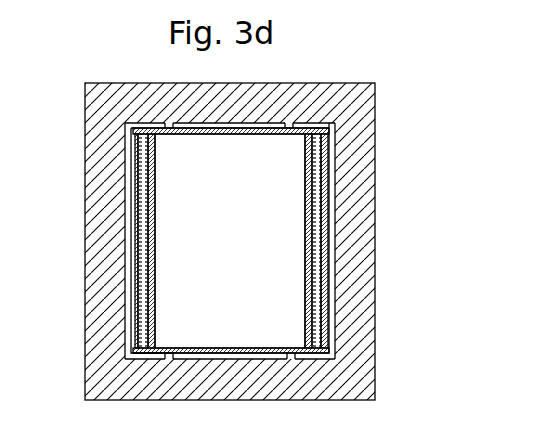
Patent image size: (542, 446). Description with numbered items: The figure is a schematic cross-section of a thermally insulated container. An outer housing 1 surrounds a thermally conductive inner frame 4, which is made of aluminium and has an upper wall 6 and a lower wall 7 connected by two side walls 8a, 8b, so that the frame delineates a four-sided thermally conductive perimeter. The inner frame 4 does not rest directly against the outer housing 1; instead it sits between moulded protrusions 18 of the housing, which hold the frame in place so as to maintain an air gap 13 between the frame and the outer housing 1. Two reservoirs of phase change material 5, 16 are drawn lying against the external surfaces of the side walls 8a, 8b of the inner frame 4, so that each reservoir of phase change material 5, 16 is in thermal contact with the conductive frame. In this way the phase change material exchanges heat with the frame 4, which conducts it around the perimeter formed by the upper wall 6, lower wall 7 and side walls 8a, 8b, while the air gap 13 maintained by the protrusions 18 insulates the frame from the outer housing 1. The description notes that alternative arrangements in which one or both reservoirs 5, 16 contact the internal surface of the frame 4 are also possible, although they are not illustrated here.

The outer housing 1 is at (352, 330).
The thermally conductive inner frame 4 is at (300, 232).
The first reservoir of phase change material 5 is at (136, 222).
The upper wall 6 is at (172, 140).
The lower wall 7 is at (170, 347).
The side wall 8a is at (149, 283).
The side wall 8b is at (320, 282).
The air gap 13 is at (329, 236).
The reservoir of phase change material 16 is at (328, 175).
The moulded protrusions 18 is at (290, 123).